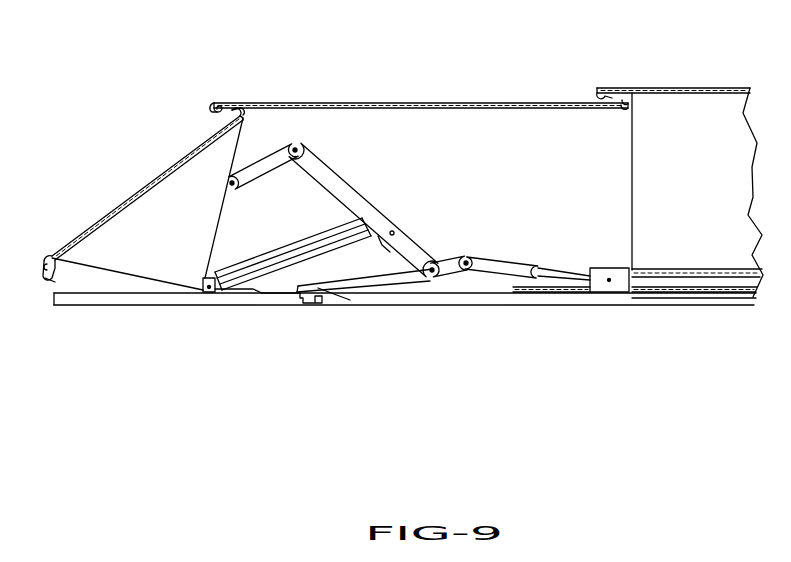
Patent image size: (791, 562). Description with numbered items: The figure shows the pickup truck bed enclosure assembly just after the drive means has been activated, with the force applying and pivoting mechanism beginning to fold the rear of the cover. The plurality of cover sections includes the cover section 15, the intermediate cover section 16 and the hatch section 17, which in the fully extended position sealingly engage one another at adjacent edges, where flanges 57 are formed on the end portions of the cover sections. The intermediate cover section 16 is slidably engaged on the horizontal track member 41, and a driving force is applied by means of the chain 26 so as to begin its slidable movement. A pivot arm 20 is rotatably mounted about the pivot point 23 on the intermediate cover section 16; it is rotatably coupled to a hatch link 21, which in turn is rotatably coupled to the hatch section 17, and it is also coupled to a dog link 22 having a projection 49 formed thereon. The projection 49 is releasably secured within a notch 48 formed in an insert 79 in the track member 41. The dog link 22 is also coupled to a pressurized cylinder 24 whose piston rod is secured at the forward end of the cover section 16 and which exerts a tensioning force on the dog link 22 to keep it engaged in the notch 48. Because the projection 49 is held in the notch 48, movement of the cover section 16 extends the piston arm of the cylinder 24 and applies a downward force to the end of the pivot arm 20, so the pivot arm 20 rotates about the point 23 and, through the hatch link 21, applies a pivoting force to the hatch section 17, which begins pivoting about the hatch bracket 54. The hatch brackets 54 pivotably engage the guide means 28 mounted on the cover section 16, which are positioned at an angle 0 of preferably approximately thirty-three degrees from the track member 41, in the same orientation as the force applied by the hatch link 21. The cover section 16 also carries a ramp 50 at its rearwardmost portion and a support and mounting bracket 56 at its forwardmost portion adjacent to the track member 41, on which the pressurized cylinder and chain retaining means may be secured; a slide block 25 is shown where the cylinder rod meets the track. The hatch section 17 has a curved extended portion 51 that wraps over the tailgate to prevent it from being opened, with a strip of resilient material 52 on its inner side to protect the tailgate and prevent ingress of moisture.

The cover section 15 is at (706, 152).
The intermediate cover section 16 is at (511, 154).
The hatch section 17 is at (173, 236).
The pivot arm 20 is at (337, 173).
The hatch link 21 is at (268, 160).
The dog link 22 is at (387, 273).
The pivot point 23 is at (394, 234).
The pressurized cylinder 24 is at (495, 262).
The slide block 25 is at (618, 285).
The chain 26 is at (693, 269).
The guide means 28 is at (315, 237).
The track member 41 is at (128, 296).
The notch 48 is at (322, 302).
The projection 49 is at (333, 292).
The ramp 50 is at (230, 294).
The extended portion 51 is at (44, 259).
The strip of resilient material 52 is at (50, 279).
The hatch bracket 54 is at (203, 293).
The support and mounting bracket 56 is at (557, 290).
The flange 57 is at (213, 112).
The insert 79 is at (281, 305).
The angle 0 is at (240, 238).